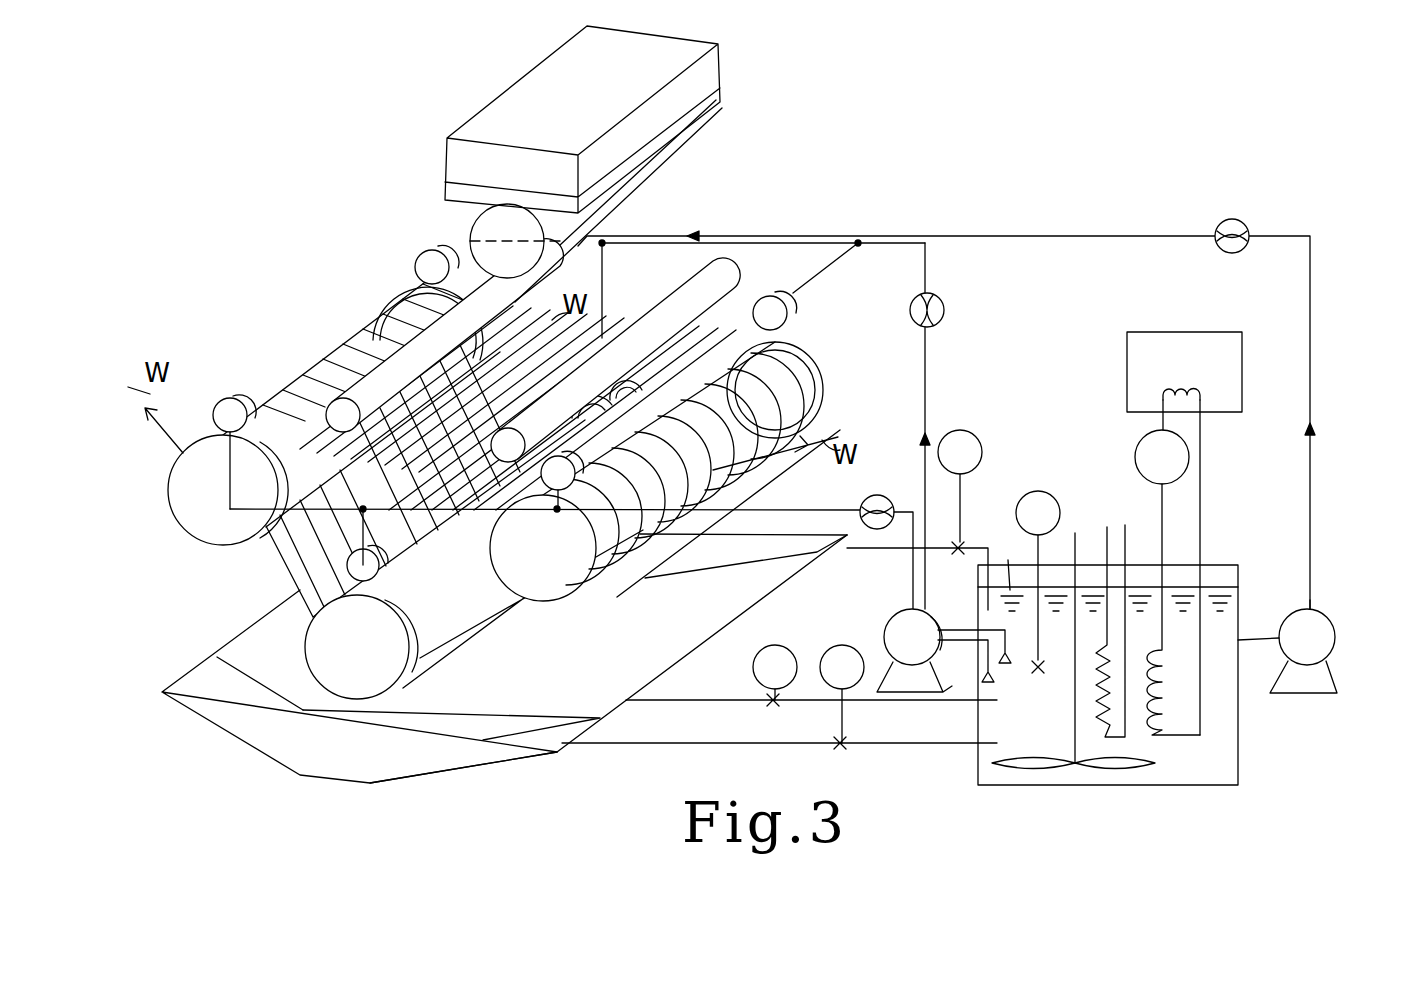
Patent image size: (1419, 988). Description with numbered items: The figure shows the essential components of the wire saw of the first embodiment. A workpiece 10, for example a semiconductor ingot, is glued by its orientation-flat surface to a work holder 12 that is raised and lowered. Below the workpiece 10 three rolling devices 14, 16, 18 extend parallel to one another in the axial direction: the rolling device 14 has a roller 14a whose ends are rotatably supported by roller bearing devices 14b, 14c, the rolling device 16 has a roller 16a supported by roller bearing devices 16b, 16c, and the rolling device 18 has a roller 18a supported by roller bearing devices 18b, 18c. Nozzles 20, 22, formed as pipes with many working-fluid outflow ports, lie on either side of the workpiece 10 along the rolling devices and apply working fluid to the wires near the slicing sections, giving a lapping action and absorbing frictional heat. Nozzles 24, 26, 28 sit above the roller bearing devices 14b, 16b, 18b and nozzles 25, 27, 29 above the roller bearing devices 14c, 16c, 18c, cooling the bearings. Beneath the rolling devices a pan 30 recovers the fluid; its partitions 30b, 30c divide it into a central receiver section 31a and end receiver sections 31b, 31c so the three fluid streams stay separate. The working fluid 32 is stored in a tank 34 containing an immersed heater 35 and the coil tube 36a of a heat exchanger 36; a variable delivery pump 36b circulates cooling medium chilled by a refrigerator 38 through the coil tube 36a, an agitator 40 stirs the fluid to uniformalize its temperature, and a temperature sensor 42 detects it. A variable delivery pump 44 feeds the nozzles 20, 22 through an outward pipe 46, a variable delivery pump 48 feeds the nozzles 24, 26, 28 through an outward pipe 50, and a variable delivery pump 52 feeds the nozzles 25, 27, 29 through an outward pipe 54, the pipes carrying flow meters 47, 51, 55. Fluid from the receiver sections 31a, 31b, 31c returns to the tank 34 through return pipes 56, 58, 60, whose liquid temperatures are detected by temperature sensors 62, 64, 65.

The workpiece 10 is at (625, 183).
The work holder 12 is at (445, 160).
The rolling device 14 is at (180, 535).
The roller 14a is at (343, 350).
The roller bearing device 14b is at (220, 545).
The roller bearing device 14c is at (400, 300).
The rolling device 16 is at (555, 600).
The roller 16a is at (712, 472).
The roller bearing device 16b is at (610, 562).
The roller bearing device 16c is at (823, 382).
The rolling device 18 is at (383, 672).
The roller 18a is at (465, 628).
The roller bearing device 18b is at (420, 658).
The roller bearing device 18c is at (588, 410).
The nozzle 20 is at (543, 275).
The nozzle 22 is at (672, 298).
The nozzle 24 is at (232, 396).
The nozzle 25 is at (428, 250).
The nozzle 26 is at (548, 455).
The nozzle 27 is at (792, 315).
The nozzle 28 is at (385, 577).
The nozzle 29 is at (614, 394).
The pan 30 is at (240, 635).
The partition 30b is at (560, 710).
The partition 30c is at (702, 540).
The receiver section 31a is at (672, 650).
The receiver section 31b is at (565, 762).
The receiver section 31c is at (815, 555).
The working fluid 32 is at (1008, 560).
The tank 34 is at (1238, 742).
The heater 35 is at (1103, 652).
The heat exchanger 36 is at (1204, 484).
The coil tube 36a is at (1152, 740).
The variable delivery pump 36b is at (1135, 452).
The refrigerator 38 is at (1127, 372).
The agitator 40 is at (1040, 758).
The temperature sensor 42 is at (1048, 498).
The variable delivery pump 44 is at (1290, 614).
The outward pipe 46 is at (1095, 236).
The flow meter 47 is at (1225, 222).
The variable delivery pump 48 is at (895, 612).
The outward pipe 50 is at (825, 512).
The flow meter 51 is at (880, 497).
The variable delivery pump 52 is at (938, 612).
The outward pipe 54 is at (935, 264).
The flow meter 55 is at (946, 318).
The return pipe 56 is at (895, 702).
The return pipe 58 is at (900, 745).
The return pipe 60 is at (968, 540).
The temperature sensor 62 is at (780, 645).
The temperature sensor 64 is at (842, 645).
The temperature sensor 65 is at (983, 445).